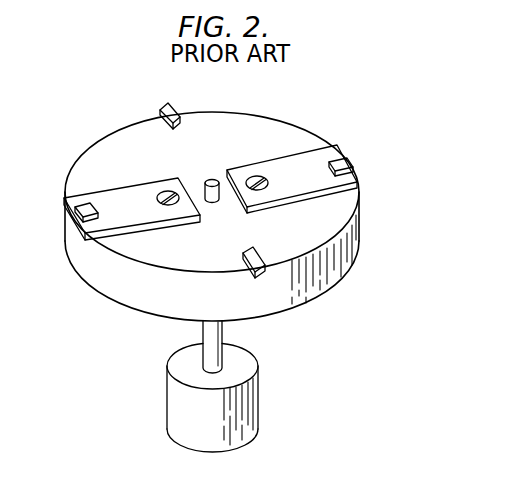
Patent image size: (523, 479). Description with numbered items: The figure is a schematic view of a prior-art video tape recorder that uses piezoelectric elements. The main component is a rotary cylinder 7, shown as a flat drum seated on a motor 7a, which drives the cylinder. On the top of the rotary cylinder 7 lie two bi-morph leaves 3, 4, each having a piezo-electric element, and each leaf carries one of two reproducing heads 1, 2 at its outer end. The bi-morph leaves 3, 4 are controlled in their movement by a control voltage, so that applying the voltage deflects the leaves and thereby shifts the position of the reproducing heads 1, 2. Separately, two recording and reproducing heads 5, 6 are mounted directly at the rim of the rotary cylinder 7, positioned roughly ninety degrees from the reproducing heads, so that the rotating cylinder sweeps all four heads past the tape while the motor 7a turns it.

The reproducing head 1 is at (88, 206).
The reproducing head 2 is at (352, 163).
The bi-morph leaf 3 is at (147, 182).
The bi-morph leaf 4 is at (282, 159).
The recording and reproducing head 5 is at (168, 103).
The recording and reproducing head 6 is at (262, 279).
The rotary cylinder 7 is at (345, 257).
The motor 7a is at (250, 402).